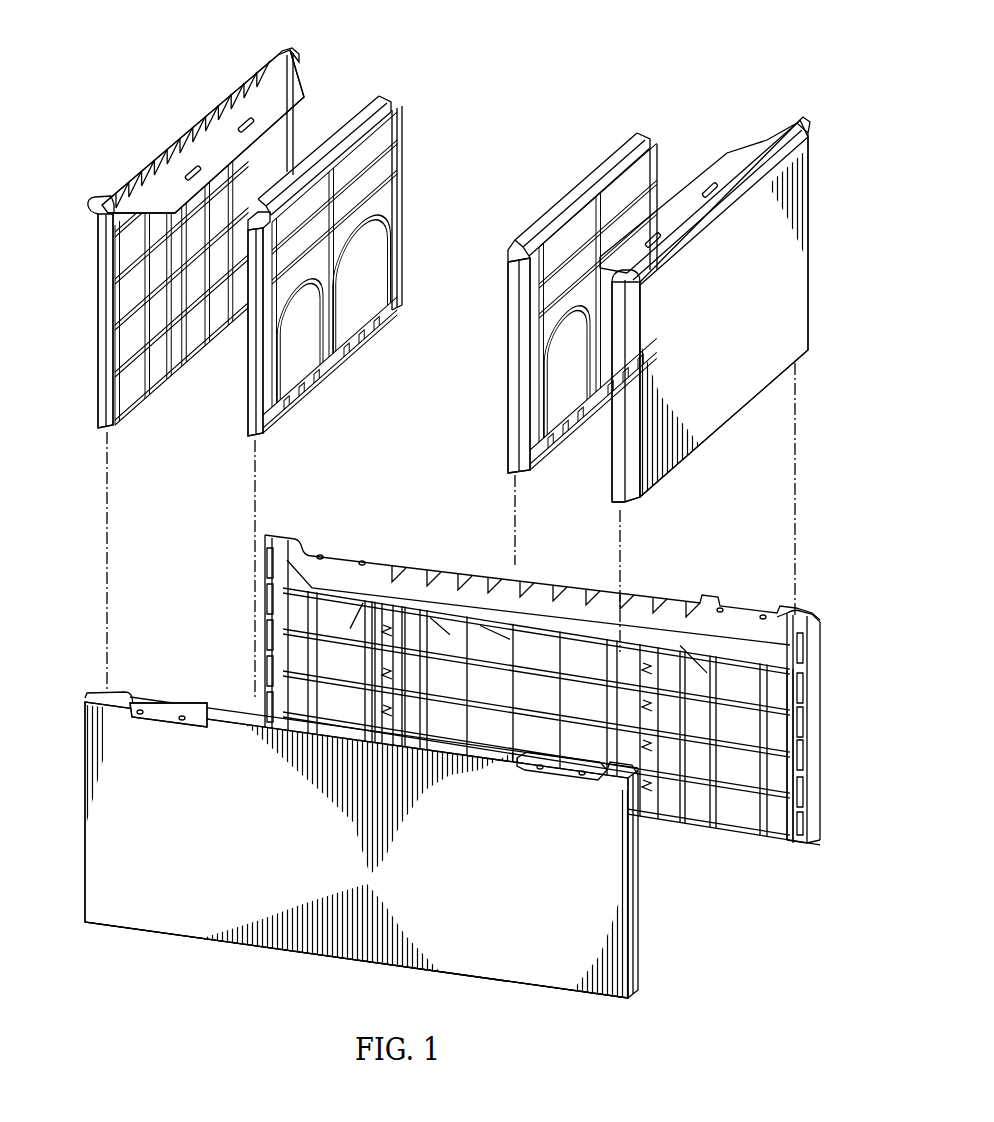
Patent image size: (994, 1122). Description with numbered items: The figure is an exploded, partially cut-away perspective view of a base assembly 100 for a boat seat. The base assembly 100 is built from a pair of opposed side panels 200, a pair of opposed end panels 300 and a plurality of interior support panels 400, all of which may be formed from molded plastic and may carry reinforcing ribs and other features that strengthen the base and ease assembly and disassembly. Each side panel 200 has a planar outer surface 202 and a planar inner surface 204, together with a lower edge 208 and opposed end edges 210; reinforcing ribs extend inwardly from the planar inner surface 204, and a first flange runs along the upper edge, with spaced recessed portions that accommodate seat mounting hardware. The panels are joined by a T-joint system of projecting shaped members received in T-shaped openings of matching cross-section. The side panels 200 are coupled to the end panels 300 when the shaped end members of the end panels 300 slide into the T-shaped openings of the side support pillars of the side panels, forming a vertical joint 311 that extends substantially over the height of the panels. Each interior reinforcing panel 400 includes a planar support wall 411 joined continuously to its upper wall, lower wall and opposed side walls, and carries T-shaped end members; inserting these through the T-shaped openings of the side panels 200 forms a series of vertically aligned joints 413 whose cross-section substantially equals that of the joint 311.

The base assembly 100 is at (695, 58).
The side panel 200 is at (420, 557).
The planar outer surface 202 is at (464, 963).
The planar inner surface 204 is at (541, 652).
The lower edge 208 is at (508, 982).
The end edge 210 is at (814, 633).
The end panel 300 is at (184, 130).
The vertical joint 311 is at (284, 49).
The interior reinforcing panel 400 is at (356, 111).
The planar support wall 411 is at (399, 105).
The vertically aligned joint 413 is at (391, 635).